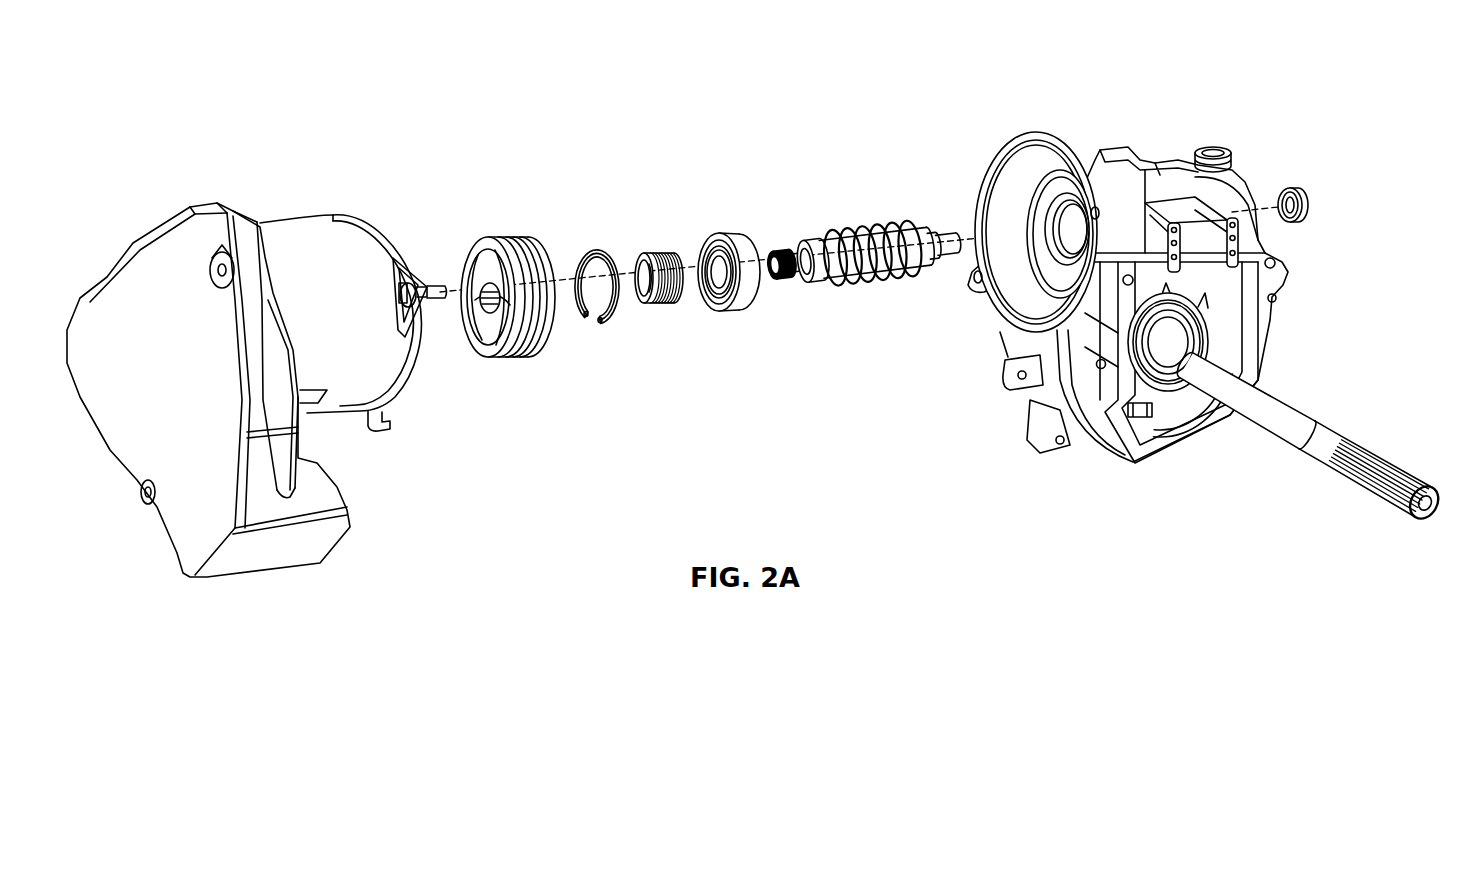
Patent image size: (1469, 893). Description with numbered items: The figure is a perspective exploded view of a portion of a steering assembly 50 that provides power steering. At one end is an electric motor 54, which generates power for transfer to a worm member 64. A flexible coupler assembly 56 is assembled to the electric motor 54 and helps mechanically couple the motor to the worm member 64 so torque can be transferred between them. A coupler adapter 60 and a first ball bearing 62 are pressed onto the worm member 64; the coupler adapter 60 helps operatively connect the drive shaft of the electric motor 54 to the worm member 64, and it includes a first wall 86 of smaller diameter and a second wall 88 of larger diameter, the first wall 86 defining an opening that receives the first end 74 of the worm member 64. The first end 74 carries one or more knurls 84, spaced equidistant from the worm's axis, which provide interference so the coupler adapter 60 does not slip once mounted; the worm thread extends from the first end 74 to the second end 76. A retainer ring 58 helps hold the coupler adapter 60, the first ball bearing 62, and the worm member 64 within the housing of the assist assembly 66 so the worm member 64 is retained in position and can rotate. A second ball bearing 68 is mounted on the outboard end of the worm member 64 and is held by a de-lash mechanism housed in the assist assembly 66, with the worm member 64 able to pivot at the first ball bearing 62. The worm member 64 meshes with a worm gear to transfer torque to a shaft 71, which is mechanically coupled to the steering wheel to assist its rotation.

The steering assembly 50 is at (1013, 66).
The electric motor 54 is at (346, 205).
The flexible coupler assembly 56 is at (500, 233).
The retainer ring 58 is at (596, 252).
The coupler adapter 60 is at (656, 246).
The first ball bearing 62 is at (720, 230).
The worm member 64 is at (866, 222).
The assist assembly 66 is at (1222, 145).
The second ball bearing 68 is at (1302, 187).
The shaft 71 is at (1293, 397).
The first end 74 is at (777, 253).
The second end 76 is at (936, 232).
The knurls 84 is at (793, 282).
The first wall 86 is at (683, 293).
The second wall 88 is at (662, 305).